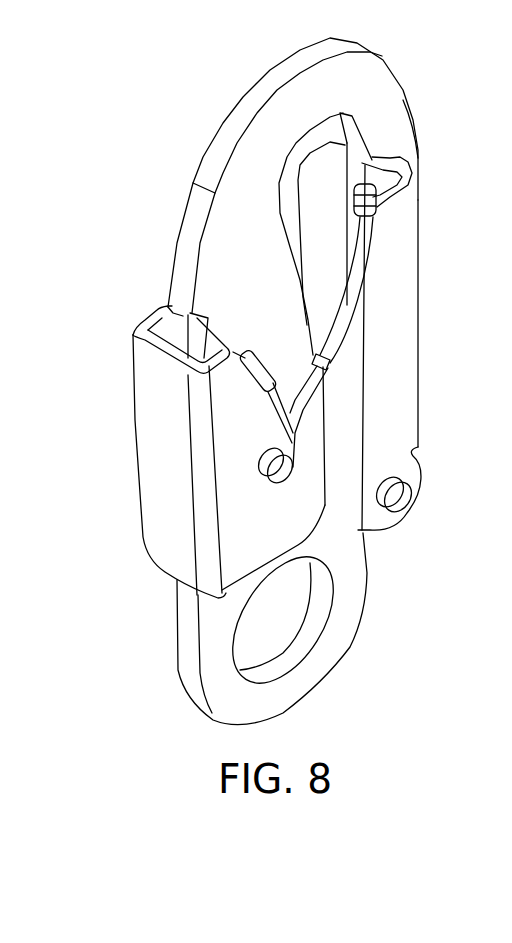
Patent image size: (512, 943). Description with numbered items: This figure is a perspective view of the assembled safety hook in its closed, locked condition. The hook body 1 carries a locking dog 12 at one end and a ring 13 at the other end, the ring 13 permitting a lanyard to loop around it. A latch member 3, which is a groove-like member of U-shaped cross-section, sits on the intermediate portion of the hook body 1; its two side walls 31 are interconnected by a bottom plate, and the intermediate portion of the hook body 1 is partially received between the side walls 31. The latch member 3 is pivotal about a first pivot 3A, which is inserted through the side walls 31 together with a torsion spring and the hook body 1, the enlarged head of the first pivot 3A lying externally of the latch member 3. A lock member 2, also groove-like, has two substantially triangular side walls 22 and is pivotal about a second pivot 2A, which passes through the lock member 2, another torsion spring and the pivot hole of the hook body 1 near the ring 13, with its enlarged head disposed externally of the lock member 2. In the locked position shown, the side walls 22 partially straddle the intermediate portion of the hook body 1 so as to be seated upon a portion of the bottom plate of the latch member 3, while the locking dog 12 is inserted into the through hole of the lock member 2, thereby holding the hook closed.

The hook body 1 is at (237, 118).
The locking dog 12 is at (375, 212).
The lock member 2 is at (395, 340).
The side walls 22 is at (315, 443).
The second pivot 2A is at (404, 497).
The ring 13 is at (338, 634).
The latch member 3 is at (130, 493).
The first pivot 3A is at (222, 590).
The side walls 31 is at (167, 332).